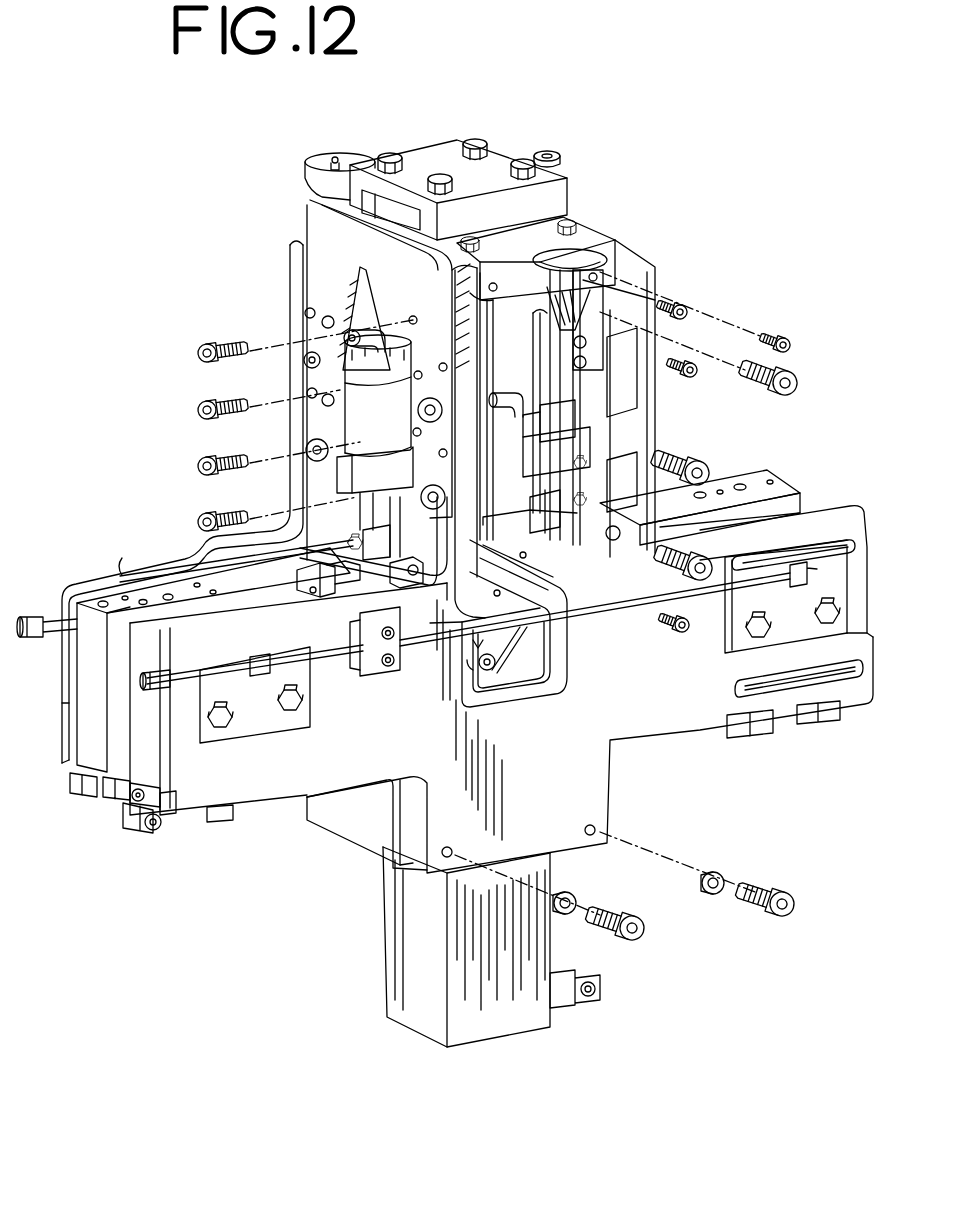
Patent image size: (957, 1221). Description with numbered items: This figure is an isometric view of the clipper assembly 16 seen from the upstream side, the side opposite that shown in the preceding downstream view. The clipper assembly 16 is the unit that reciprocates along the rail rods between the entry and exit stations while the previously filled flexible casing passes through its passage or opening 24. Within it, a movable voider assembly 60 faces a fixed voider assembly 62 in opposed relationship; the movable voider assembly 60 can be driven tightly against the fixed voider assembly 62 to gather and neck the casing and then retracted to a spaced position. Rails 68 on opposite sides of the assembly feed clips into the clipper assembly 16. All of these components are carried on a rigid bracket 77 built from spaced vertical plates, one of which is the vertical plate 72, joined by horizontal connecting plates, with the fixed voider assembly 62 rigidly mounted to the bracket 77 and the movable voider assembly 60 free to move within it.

The clipper assembly 16 is at (690, 246).
The passage or opening 24 is at (545, 657).
The movable voider assembly 60 is at (108, 582).
The fixed voider assembly 62 is at (270, 780).
The rails 68 is at (560, 593).
The vertical plate 72 is at (590, 758).
The bracket 77 is at (188, 800).